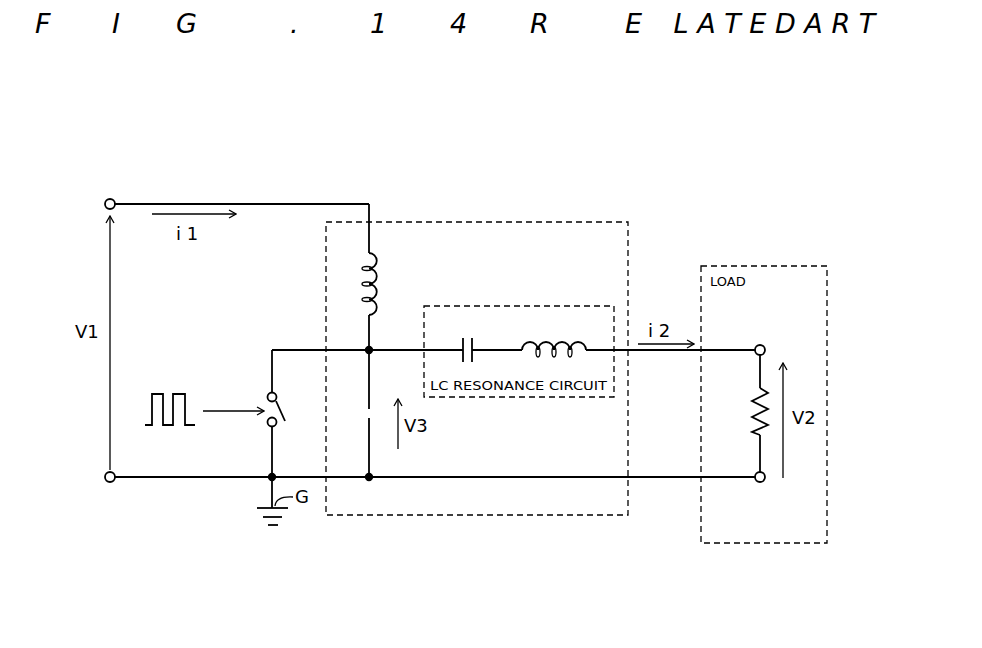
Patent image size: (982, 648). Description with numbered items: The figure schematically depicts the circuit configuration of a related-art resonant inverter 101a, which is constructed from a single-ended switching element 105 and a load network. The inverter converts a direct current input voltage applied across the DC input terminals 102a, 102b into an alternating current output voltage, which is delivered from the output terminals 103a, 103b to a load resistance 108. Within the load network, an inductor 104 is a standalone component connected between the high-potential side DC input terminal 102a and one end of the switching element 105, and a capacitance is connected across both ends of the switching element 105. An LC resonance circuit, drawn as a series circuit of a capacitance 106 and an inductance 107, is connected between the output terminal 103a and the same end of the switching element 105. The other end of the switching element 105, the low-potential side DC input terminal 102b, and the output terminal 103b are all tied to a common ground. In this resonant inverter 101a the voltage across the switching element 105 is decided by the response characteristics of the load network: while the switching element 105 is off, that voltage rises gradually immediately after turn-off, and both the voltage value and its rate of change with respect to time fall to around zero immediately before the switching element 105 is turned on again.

The resonant inverter 101a is at (398, 161).
The high-potential side DC input terminal 102a is at (112, 198).
The low-potential side DC input terminal 102b is at (112, 483).
The output terminal 103a is at (758, 344).
The output terminal 103b is at (760, 483).
The inductor 104 is at (380, 262).
The switching element 105 is at (283, 409).
The capacitance 106 is at (470, 340).
The inductance 107 is at (546, 340).
The load resistance 108 is at (752, 416).